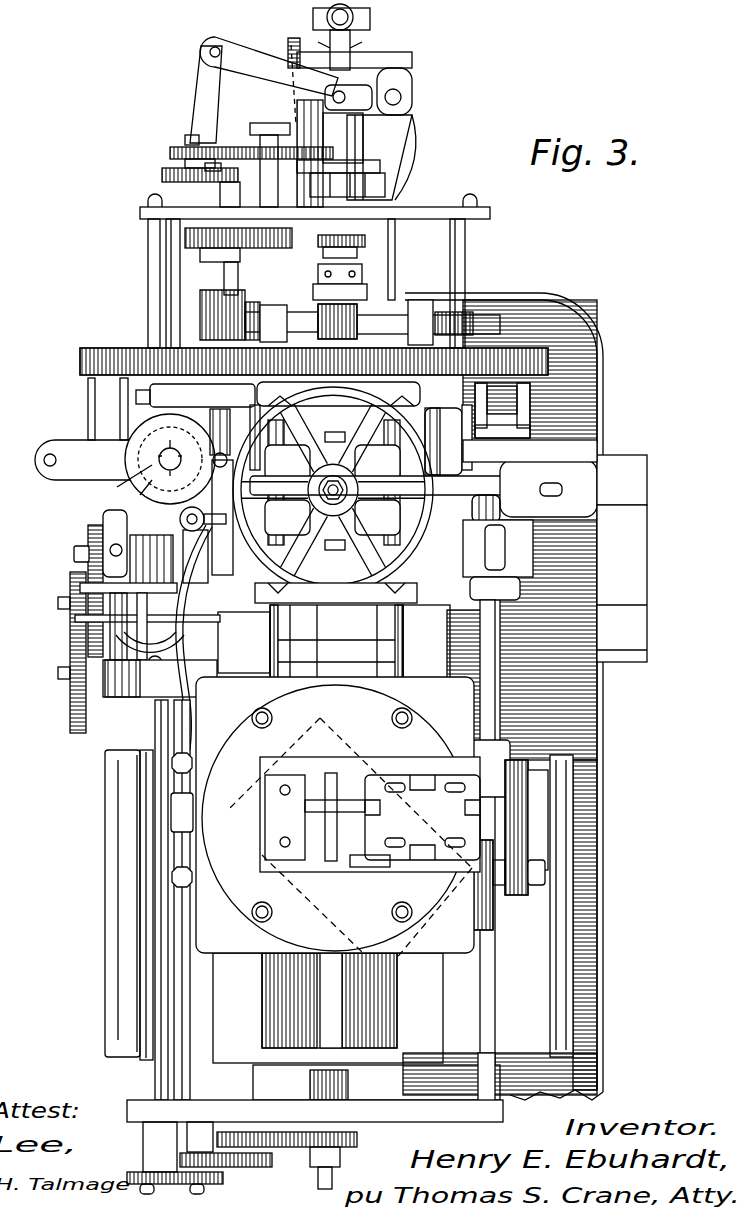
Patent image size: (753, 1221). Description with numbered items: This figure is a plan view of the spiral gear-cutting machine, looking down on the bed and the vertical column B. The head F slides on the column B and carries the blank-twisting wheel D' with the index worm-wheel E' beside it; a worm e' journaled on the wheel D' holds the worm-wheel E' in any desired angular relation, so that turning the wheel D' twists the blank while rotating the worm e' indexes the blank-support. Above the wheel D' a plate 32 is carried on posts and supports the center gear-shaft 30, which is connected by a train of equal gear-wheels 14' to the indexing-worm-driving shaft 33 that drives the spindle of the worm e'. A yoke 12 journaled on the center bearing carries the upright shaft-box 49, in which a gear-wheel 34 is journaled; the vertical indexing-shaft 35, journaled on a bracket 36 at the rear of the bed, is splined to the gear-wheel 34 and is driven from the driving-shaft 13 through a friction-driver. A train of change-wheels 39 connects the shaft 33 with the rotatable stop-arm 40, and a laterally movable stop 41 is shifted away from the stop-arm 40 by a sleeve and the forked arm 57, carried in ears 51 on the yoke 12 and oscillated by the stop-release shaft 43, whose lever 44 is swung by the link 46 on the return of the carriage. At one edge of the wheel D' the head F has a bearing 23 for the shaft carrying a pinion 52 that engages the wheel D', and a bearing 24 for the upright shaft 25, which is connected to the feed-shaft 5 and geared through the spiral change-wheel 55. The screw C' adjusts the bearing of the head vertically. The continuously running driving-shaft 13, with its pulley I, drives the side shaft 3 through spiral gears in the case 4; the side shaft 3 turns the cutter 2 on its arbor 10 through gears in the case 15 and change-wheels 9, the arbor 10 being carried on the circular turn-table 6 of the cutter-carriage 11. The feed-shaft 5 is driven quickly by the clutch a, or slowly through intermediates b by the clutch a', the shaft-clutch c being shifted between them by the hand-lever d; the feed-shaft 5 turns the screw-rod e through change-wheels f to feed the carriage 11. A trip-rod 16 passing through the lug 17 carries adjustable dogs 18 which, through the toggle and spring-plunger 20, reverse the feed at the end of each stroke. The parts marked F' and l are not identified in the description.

The gear-wheel 34 is at (326, 12).
The upright shaft-box 49 is at (372, 16).
The lever 44 is at (265, 55).
The vertical indexing-shaft 35 is at (352, 38).
The yoke 12 is at (410, 55).
The center gear-shaft 30 is at (412, 64).
The ears 51 is at (413, 80).
The stop-release shaft 43 is at (401, 98).
The link 46 is at (206, 96).
The rotatable stop-arm 40 is at (305, 125).
The forked arm 57 is at (385, 108).
The laterally-movable stop 41 is at (332, 132).
The train of change-wheels 39 is at (168, 150).
The indexing-worm-driving shaft 33 is at (221, 170).
The plate 32 is at (486, 213).
The gear-wheels 14' is at (264, 245).
The index worm-wheel E' is at (475, 298).
The blank-twisting wheel D' is at (504, 683).
The bracket 36 is at (365, 266).
The indexing worm e' is at (368, 307).
The pinion 52 is at (90, 348).
The bearing 23 is at (88, 407).
The head F is at (195, 395).
The vertical column B is at (250, 412).
The upright shaft 25 is at (170, 459).
The spiral wheel 55 is at (120, 483).
The bearing 24 is at (133, 498).
The spring-plunger 20 is at (180, 518).
The screw C' is at (333, 490).
The driving-shaft 13 is at (76, 553).
The gear case 4 is at (498, 560).
The driving-pulley I is at (622, 583).
The clutch a is at (147, 585).
The intermediates b is at (70, 640).
The shaft-clutch c is at (142, 637).
The bar F' is at (336, 610).
The hand-lever d is at (115, 643).
The clutch a' is at (160, 693).
The cutter-carriage 11 is at (335, 815).
The circular turn-table 6 is at (390, 686).
The side shaft 3 is at (480, 700).
The feed-shaft 5 is at (158, 745).
The dogs 18 is at (195, 762).
The lug 17 is at (195, 812).
The cutter-arbor 10 is at (257, 818).
The cutter 2 is at (368, 778).
The bolts l is at (275, 718).
The gear case 15 is at (491, 768).
The change-wheels 9 is at (518, 797).
The trip-rod 16 is at (180, 930).
The screw-rod e is at (425, 1075).
The change-wheels f is at (300, 1158).